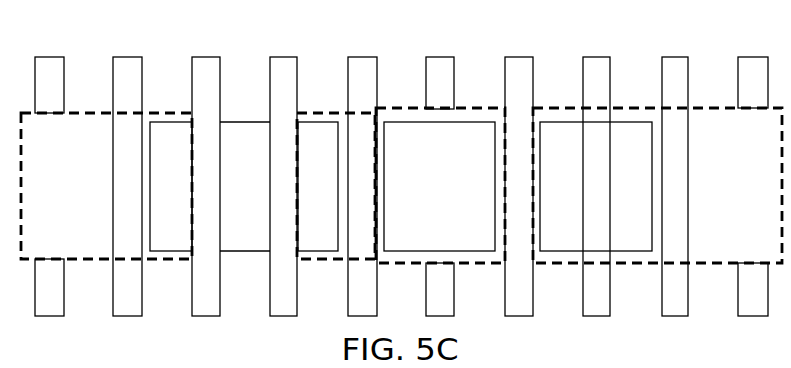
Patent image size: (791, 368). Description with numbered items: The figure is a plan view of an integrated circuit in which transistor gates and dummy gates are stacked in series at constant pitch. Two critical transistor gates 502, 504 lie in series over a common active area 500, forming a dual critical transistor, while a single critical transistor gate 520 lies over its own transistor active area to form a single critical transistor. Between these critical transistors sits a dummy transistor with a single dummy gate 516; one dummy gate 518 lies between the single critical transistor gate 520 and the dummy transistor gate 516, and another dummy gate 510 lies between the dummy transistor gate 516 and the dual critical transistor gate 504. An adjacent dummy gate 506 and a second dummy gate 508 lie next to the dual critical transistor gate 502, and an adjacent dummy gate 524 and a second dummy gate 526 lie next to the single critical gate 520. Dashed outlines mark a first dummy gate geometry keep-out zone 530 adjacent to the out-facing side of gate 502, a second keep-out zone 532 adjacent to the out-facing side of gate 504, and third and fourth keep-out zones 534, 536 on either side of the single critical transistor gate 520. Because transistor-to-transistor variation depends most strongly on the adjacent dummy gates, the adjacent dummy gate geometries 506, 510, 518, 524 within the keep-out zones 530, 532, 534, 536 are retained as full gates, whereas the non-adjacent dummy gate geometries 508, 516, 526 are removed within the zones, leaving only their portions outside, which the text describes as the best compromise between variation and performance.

The common active area 500 is at (255, 124).
The critical transistor gate 502 is at (206, 63).
The critical transistor gate 504 is at (283, 63).
The adjacent dummy gate 506 is at (128, 63).
The second dummy gate 508 is at (50, 63).
The dummy gate 510 is at (362, 63).
The dummy gate 516 is at (442, 63).
The dummy gate 518 is at (520, 63).
The single critical transistor gate 520 is at (597, 63).
The adjacent dummy gate 524 is at (676, 63).
The second dummy gate 526 is at (754, 63).
The first dummy gate geometry keep-out zone 530 is at (96, 111).
The second dummy gate geometry keep-out zone 532 is at (326, 111).
The third dummy gate geometry keep-out zone 534 is at (475, 107).
The fourth dummy gate geometry keep-out zone 536 is at (712, 107).